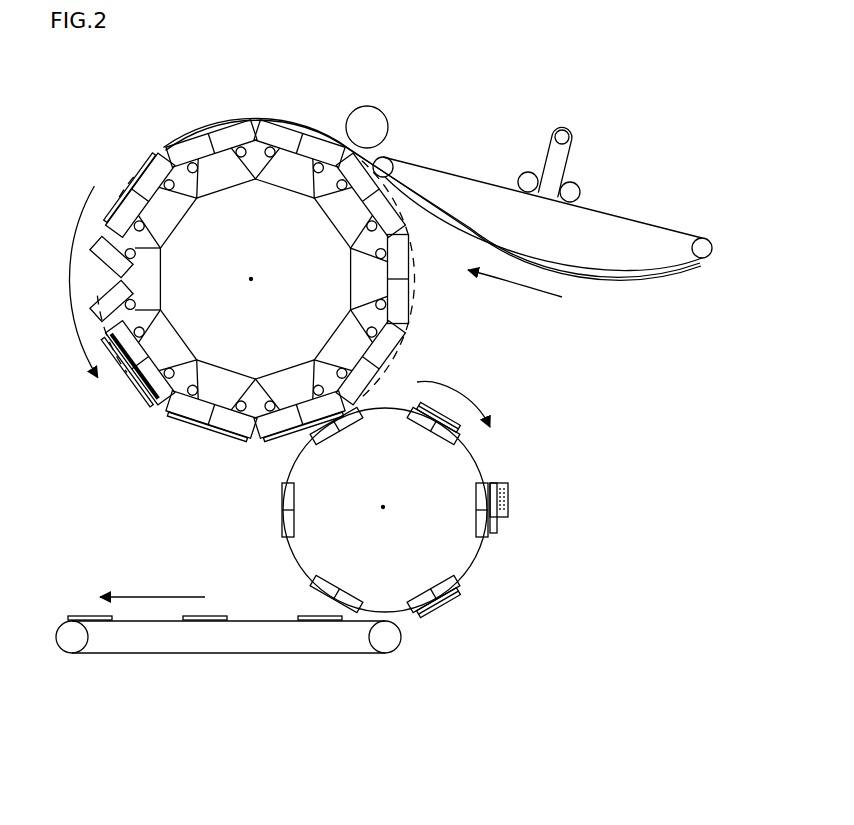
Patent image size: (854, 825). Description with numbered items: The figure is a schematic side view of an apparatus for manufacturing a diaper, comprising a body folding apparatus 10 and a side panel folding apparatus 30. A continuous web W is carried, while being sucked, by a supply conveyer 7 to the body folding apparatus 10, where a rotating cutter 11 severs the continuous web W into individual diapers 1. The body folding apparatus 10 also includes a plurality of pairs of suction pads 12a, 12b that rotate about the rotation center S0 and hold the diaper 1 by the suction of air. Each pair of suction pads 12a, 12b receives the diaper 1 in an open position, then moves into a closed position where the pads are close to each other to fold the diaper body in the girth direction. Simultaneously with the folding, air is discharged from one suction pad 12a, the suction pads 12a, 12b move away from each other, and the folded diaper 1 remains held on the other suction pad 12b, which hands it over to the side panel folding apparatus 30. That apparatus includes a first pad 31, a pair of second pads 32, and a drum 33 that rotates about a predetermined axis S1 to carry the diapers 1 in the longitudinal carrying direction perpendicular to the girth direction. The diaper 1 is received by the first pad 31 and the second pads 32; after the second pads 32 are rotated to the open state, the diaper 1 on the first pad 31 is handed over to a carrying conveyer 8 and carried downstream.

The diaper 1 is at (208, 141).
The supply conveyer 7 is at (627, 232).
The carrying conveyer 8 is at (247, 650).
The body folding apparatus 10 is at (88, 160).
The rotating cutter 11 is at (371, 113).
The suction pad 12a is at (186, 148).
The suction pad 12b is at (233, 136).
The side panel folding apparatus 30 is at (513, 454).
The first pad 31 is at (351, 430).
The second pad 32 is at (420, 424).
The drum 33 is at (480, 560).
The continuous web W is at (621, 278).
The rotation center S0 is at (251, 282).
The axis S1 is at (383, 509).